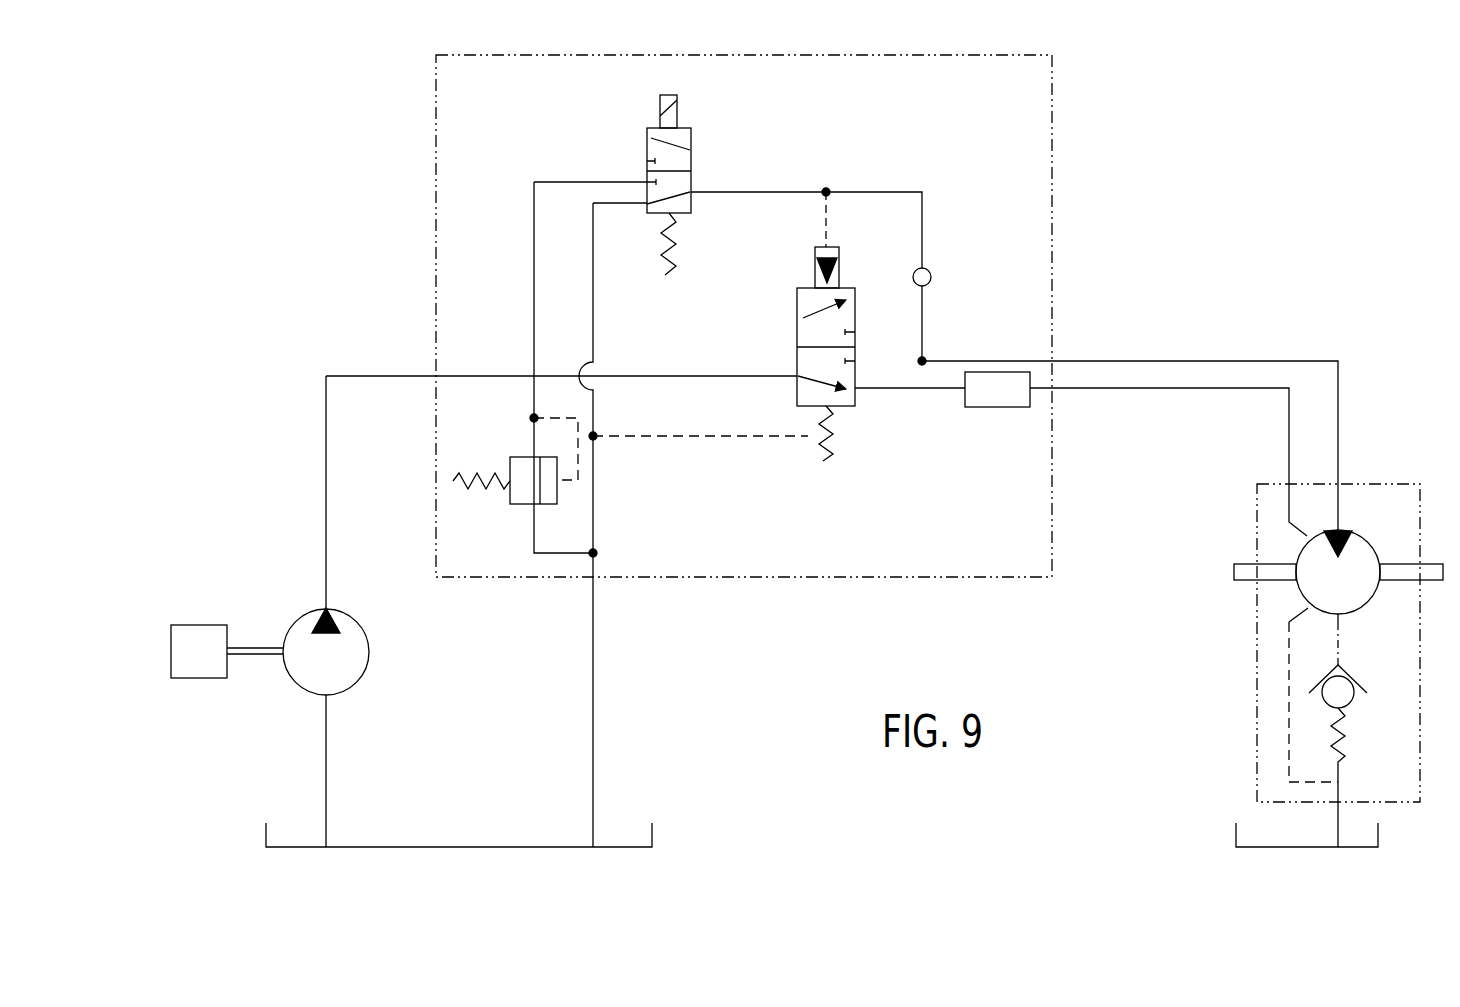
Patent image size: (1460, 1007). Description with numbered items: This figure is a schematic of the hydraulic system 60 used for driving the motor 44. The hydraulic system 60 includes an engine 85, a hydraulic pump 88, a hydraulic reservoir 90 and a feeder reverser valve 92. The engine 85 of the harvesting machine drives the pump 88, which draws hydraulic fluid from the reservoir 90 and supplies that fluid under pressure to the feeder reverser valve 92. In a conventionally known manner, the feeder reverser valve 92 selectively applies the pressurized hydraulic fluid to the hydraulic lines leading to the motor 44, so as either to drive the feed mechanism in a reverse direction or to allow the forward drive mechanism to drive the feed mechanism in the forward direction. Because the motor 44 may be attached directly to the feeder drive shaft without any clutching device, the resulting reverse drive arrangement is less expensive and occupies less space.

The hydraulic system 60 is at (329, 255).
The feeder reverser valve 92 is at (592, 55).
The engine 85 is at (196, 626).
The hydraulic pump 88 is at (362, 683).
The hydraulic reservoir 90 is at (455, 848).
The motor 44 is at (1420, 532).